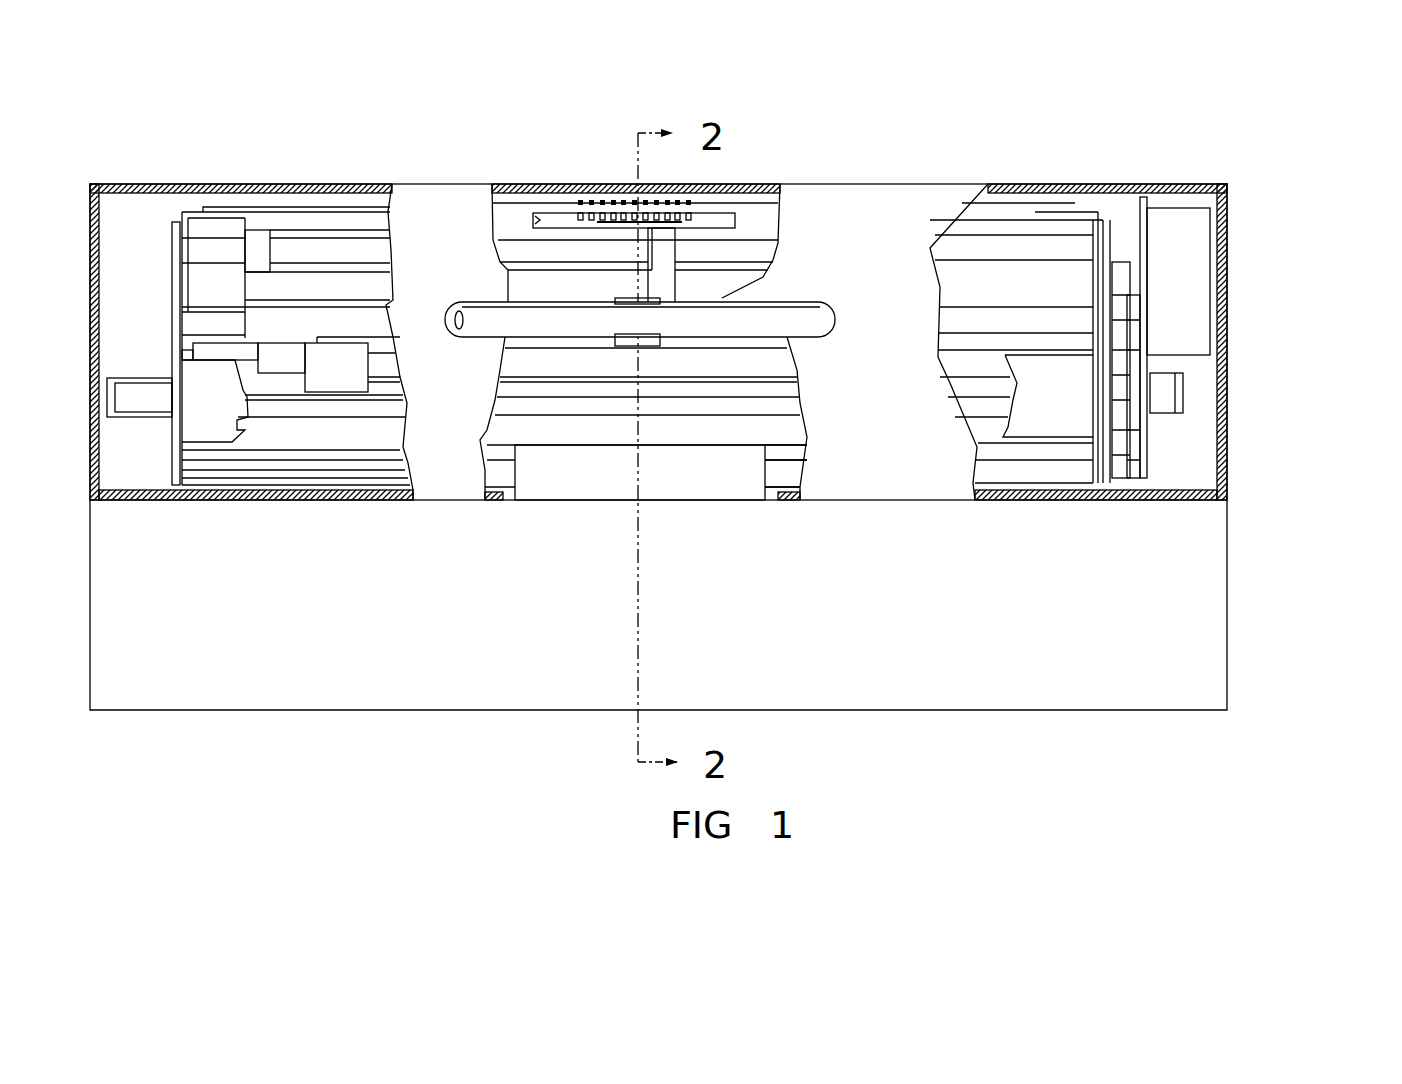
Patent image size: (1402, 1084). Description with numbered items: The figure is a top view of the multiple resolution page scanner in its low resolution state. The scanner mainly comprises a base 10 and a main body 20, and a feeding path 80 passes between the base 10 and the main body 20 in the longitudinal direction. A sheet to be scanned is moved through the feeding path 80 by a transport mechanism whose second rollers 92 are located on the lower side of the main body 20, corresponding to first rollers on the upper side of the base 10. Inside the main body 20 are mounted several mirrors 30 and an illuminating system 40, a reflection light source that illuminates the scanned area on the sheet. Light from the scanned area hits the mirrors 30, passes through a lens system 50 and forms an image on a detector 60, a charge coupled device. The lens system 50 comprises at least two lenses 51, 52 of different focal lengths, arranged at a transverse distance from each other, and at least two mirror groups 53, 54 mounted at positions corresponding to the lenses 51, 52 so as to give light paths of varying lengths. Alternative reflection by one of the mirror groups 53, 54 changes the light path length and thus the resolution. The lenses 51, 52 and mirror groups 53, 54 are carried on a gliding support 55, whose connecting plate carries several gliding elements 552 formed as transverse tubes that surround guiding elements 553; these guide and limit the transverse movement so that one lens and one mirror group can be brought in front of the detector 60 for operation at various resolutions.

The base 10 is at (1248, 670).
The main body 20 is at (180, 172).
The mirrors 30 is at (1060, 415).
The illuminating system 40 is at (570, 412).
The lens system 50 is at (692, 278).
The lens 51 is at (648, 342).
The lens 52 is at (270, 362).
The mirror group 53 is at (1068, 345).
The mirror group 54 is at (313, 383).
The gliding support 55 is at (345, 278).
The gliding elements 552 is at (255, 242).
The guiding elements 553 is at (305, 243).
The detector 60 is at (573, 225).
The feeding path 80 is at (785, 445).
The second rollers 92 is at (692, 488).